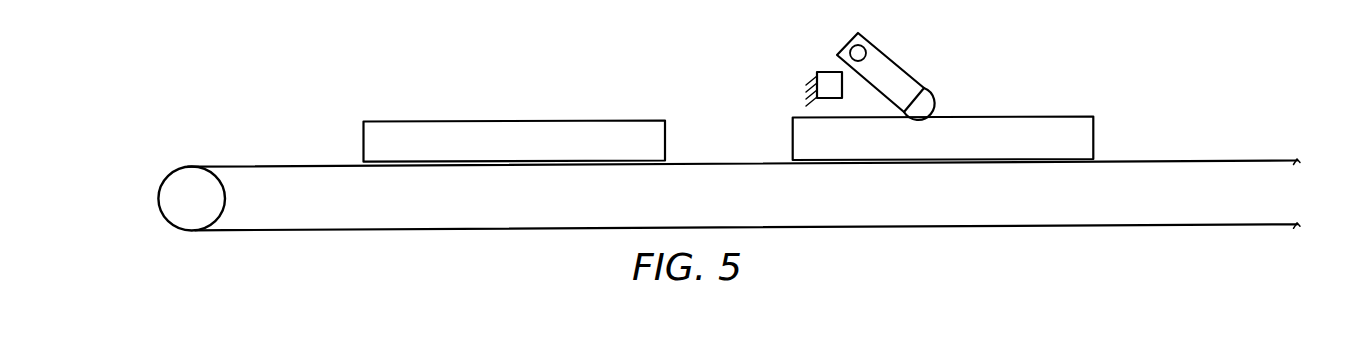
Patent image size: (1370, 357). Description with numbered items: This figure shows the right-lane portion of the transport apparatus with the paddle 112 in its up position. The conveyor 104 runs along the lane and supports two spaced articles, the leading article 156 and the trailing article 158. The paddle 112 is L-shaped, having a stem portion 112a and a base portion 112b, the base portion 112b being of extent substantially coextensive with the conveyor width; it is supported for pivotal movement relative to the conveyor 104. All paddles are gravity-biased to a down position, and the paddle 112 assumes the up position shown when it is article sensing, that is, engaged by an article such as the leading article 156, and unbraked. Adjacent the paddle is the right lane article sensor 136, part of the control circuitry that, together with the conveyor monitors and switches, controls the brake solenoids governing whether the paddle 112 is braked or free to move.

The conveyor 104 is at (1208, 160).
The article 158 is at (569, 125).
The article 156 is at (1058, 123).
The right lane article sensor 136 is at (825, 72).
The paddle 112 is at (897, 62).
The stem portion 112a is at (880, 55).
The base portion 112b is at (928, 93).